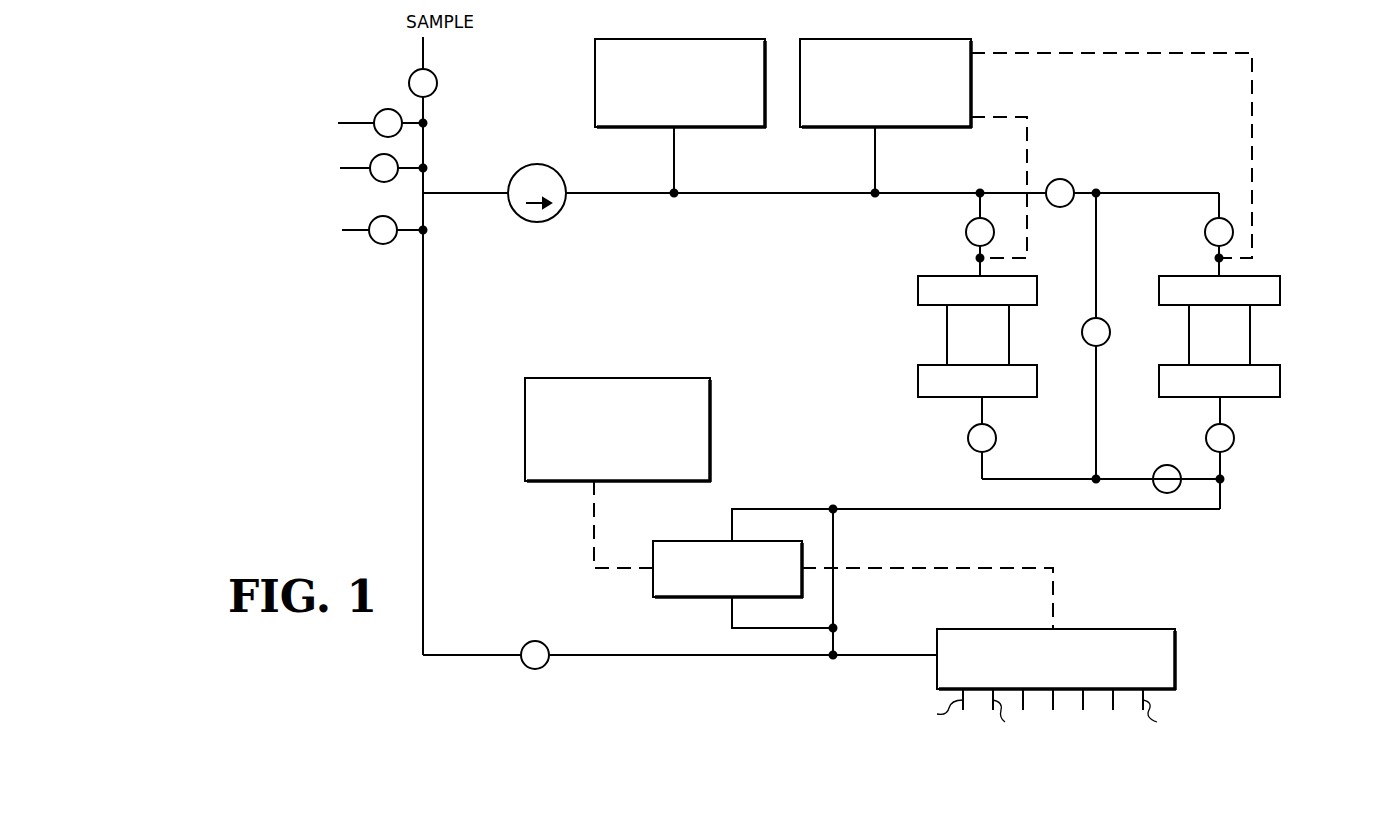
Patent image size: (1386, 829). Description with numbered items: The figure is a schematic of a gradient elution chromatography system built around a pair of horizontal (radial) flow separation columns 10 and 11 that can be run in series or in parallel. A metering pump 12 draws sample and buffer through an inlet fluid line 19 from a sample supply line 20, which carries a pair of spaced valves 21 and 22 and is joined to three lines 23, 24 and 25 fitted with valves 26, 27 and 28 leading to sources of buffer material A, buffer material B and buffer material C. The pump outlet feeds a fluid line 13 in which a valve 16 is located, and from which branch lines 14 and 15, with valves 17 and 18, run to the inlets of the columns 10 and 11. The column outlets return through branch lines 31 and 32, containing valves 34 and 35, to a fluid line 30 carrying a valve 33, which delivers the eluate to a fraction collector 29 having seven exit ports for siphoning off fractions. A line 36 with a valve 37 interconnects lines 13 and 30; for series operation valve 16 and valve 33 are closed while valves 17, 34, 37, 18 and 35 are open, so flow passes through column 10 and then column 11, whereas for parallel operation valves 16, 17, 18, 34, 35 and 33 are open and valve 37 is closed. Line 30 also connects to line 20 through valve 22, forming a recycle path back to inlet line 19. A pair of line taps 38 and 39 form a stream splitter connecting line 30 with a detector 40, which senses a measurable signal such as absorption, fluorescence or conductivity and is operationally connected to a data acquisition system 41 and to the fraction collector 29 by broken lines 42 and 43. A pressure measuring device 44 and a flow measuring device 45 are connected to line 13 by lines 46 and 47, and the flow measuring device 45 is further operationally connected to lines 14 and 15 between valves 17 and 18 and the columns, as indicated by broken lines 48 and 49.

The horizontal flow column 10 is at (947, 325).
The horizontal flow column 11 is at (1250, 340).
The metering pump 12 is at (558, 215).
The fluid line 13 is at (758, 193).
The branch line 14 is at (980, 200).
The branch line 15 is at (1219, 200).
The valve 16 is at (1069, 181).
The valve 17 is at (966, 234).
The valve 18 is at (1205, 234).
The fluid line 19 is at (465, 193).
The sample supply line 20 is at (426, 300).
The valve 21 is at (437, 83).
The valve 22 is at (530, 669).
The line 23 is at (350, 123).
The line 24 is at (352, 168).
The line 25 is at (351, 230).
The valve 26 is at (388, 109).
The valve 27 is at (390, 180).
The valve 28 is at (383, 244).
The fraction collector 29 is at (1140, 629).
The fluid line 30 is at (1043, 479).
The branch line 31 is at (982, 405).
The branch line 32 is at (1220, 405).
The valve 33 is at (1170, 465).
The valve 34 is at (968, 441).
The valve 35 is at (1234, 441).
The line 36 is at (1096, 275).
The valve 37 is at (1108, 340).
The line tap 38 is at (780, 509).
The line tap 39 is at (732, 612).
The detector 40 is at (653, 585).
The data acquisition system 41 is at (710, 420).
The broken line 42 is at (594, 514).
The broken line 43 is at (950, 568).
The pressure measuring device 44 is at (668, 39).
The flow measuring device 45 is at (893, 39).
The line 46 is at (674, 144).
The line 47 is at (875, 175).
The broken line 48 is at (1027, 148).
The broken line 49 is at (1252, 108).